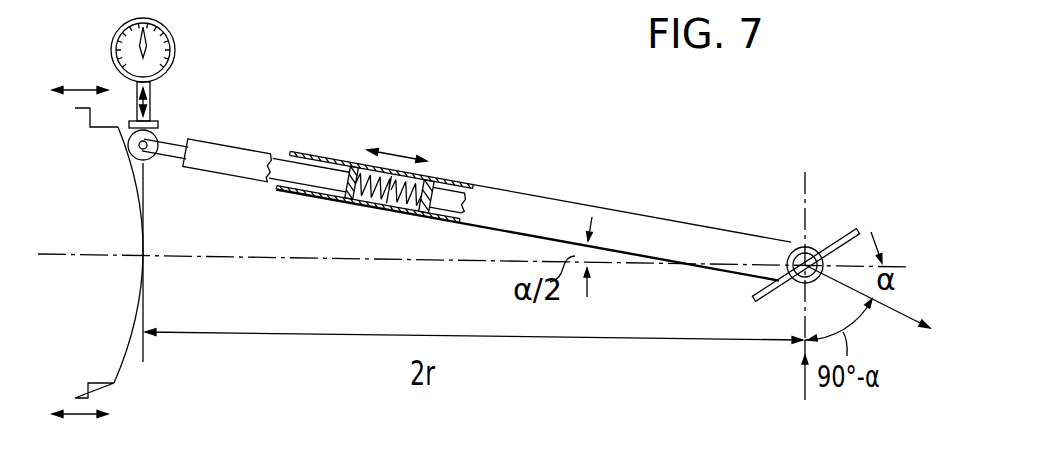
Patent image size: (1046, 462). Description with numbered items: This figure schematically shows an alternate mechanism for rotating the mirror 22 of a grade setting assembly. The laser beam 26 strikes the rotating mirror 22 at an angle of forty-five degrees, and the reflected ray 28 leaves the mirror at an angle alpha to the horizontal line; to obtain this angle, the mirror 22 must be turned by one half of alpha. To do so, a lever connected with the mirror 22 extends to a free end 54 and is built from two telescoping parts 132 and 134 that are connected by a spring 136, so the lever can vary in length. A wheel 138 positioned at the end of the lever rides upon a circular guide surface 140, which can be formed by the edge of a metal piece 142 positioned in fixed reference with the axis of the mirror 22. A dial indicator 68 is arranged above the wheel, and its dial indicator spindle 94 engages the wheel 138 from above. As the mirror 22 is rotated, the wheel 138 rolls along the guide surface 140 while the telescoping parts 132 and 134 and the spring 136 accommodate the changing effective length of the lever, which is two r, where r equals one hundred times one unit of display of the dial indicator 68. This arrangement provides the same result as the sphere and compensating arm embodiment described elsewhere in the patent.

The dial indicator 68 is at (171, 34).
The dial indicator spindle 94 is at (150, 97).
The wheel 138 is at (158, 137).
The telescoping part 134 is at (265, 151).
The spring 136 is at (403, 207).
The free end 54 is at (527, 202).
The telescoping part 132 is at (577, 212).
The rotating mirror 22 is at (847, 230).
The reflected ray 28 is at (900, 316).
The laser beam 26 is at (800, 384).
The metal piece 142 is at (82, 332).
The circular guide surface 140 is at (122, 366).